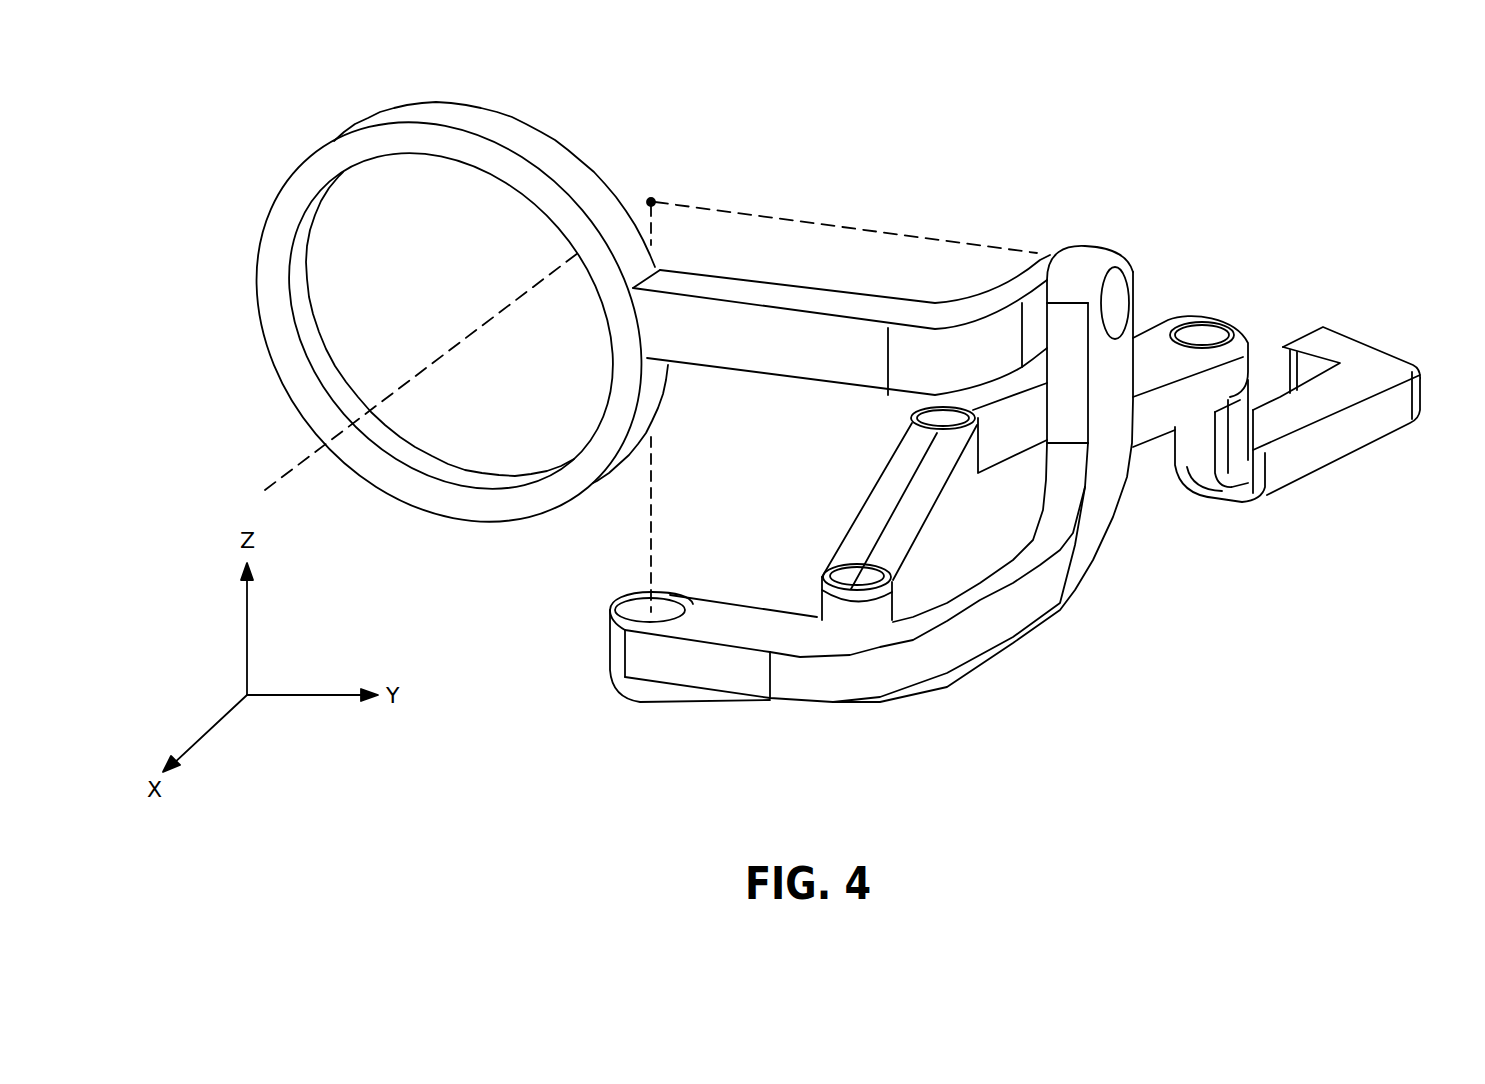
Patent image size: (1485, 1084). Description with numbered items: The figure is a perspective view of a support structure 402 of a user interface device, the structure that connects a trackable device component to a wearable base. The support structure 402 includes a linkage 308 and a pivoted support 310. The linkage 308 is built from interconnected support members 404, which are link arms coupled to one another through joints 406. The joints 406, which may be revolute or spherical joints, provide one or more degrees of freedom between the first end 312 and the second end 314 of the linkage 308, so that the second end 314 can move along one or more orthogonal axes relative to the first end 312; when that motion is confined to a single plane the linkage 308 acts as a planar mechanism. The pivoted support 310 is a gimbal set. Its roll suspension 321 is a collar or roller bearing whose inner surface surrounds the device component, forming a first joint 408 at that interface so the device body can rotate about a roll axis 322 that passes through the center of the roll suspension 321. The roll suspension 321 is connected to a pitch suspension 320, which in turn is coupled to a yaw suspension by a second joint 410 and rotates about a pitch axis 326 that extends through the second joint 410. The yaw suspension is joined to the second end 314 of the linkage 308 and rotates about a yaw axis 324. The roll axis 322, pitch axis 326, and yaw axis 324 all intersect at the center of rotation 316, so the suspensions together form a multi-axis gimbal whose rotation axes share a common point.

The linkage 308 is at (1214, 493).
The pivoted support 310 is at (693, 264).
The first end 312 is at (1316, 326).
The second end 314 is at (612, 675).
The center of rotation 316 is at (651, 200).
The pitch suspension 320 is at (840, 310).
The roll suspension 321 is at (312, 166).
The roll axis 322 is at (280, 478).
The yaw axis 324 is at (650, 517).
The pitch axis 326 is at (795, 218).
The support structure 402 is at (1033, 149).
The support members 404 is at (1172, 322).
The joints 406 is at (848, 570).
The first joint 408 is at (303, 262).
The second joint 410 is at (1116, 275).